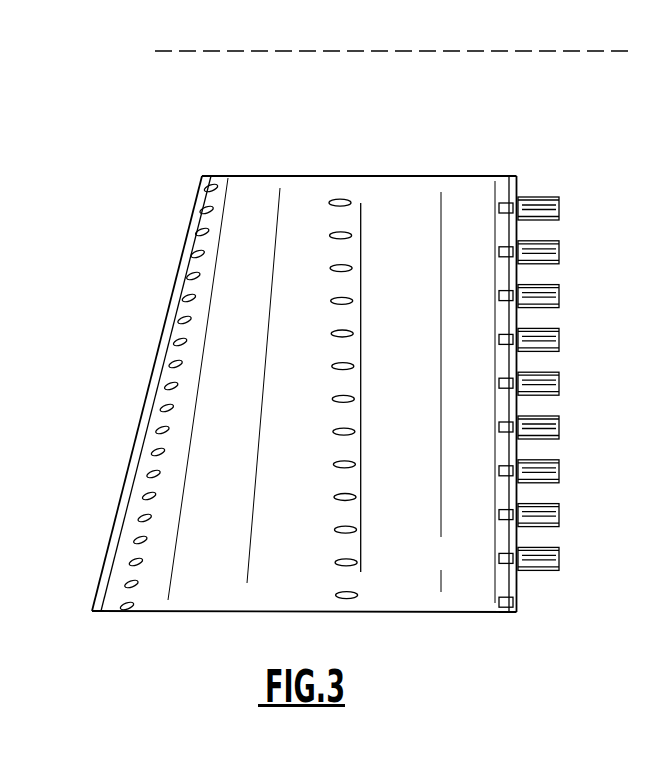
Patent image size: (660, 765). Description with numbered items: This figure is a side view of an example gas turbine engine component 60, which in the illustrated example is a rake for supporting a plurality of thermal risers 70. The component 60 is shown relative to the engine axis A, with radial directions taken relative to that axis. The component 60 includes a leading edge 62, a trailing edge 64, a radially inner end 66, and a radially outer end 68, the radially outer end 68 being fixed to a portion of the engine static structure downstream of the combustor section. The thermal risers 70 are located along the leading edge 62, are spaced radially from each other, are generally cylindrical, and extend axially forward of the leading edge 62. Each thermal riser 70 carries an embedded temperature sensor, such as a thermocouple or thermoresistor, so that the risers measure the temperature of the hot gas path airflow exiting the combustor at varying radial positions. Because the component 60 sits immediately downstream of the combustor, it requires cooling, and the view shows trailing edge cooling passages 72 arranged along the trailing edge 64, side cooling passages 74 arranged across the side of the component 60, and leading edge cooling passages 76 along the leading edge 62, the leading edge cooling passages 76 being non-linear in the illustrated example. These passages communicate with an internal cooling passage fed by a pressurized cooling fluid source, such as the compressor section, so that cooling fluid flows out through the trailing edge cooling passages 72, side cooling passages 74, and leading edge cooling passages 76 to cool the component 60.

The engine axis A is at (591, 52).
The gas turbine engine component 60 is at (355, 372).
The leading edge 62 is at (518, 181).
The trailing edge 64 is at (163, 328).
The radially inner end 66 is at (370, 176).
The radially outer end 68 is at (397, 612).
The thermal risers 70 is at (560, 208).
The trailing edge cooling passages 72 is at (157, 428).
The side cooling passages 74 is at (338, 559).
The leading edge cooling passages 76 is at (499, 600).